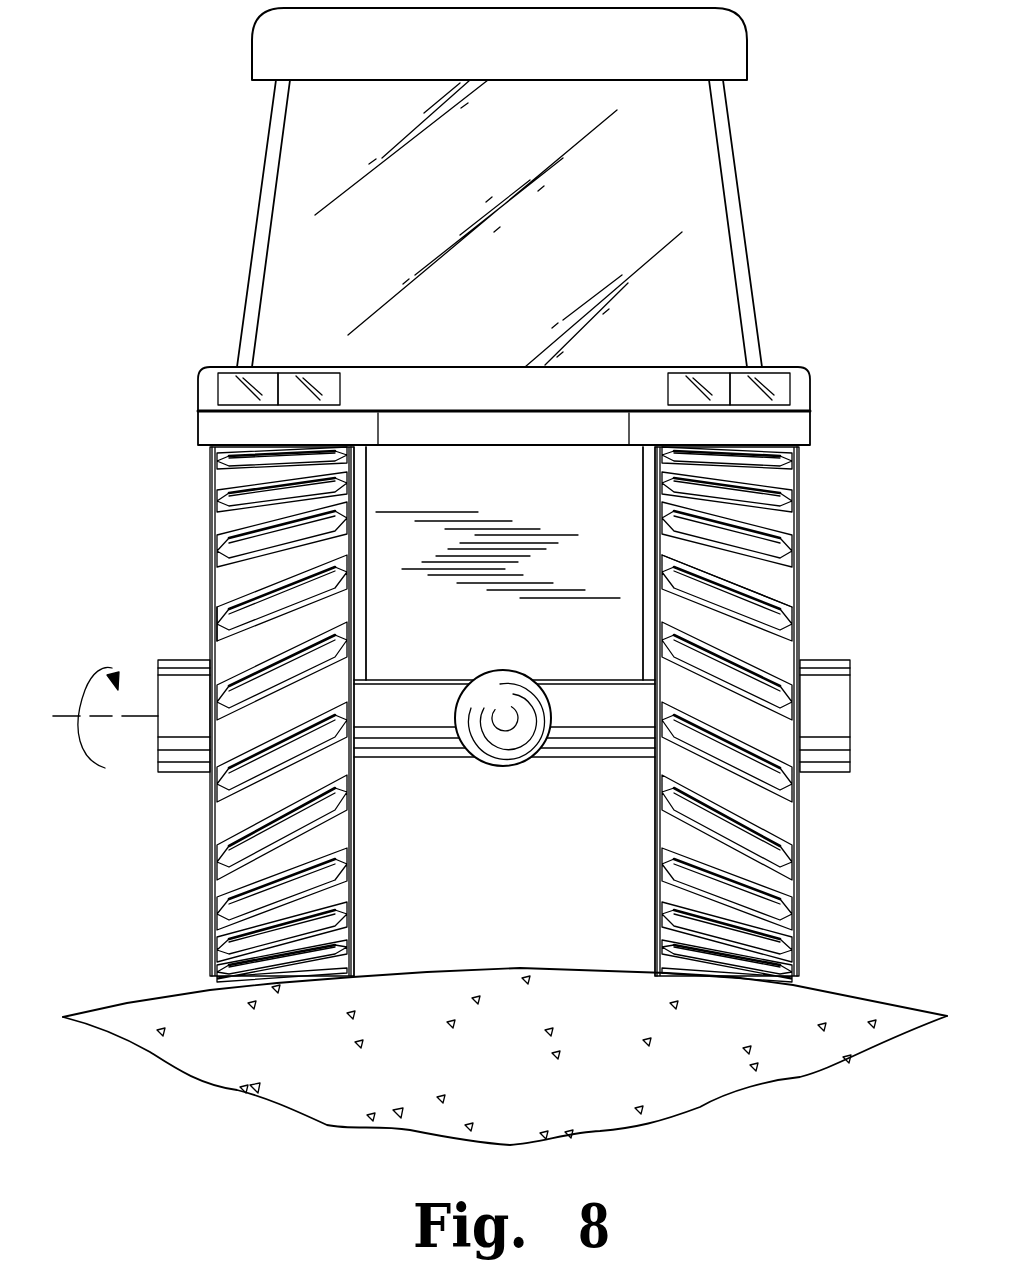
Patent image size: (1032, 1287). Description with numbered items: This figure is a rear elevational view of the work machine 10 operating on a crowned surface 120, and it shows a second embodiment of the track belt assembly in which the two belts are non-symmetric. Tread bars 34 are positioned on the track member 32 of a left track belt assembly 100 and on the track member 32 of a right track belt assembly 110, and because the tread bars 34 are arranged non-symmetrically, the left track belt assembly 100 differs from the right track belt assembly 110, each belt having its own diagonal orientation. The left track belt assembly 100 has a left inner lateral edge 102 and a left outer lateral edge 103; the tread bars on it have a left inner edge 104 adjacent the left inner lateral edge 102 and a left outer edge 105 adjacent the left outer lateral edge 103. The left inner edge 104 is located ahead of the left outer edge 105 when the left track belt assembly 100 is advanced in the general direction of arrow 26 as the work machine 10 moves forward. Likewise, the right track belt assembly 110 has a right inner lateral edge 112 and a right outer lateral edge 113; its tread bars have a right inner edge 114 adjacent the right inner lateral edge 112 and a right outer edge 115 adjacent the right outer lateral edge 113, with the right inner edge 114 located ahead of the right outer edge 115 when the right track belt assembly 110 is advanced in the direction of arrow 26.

The work machine 10 is at (195, 138).
The left track belt assembly 100 is at (174, 520).
The right track belt assembly 110 is at (828, 476).
The track member 32 is at (226, 822).
The tread bars 34 is at (232, 624).
The right outer edge 115 is at (798, 568).
The left outer edge 105 is at (216, 640).
The left outer lateral edge 103 is at (210, 789).
The right outer lateral edge 113 is at (800, 827).
The arrow 26 is at (76, 730).
The left inner edge 104 is at (350, 568).
The left inner lateral edge 102 is at (355, 606).
The right inner edge 114 is at (657, 570).
The right inner lateral edge 112 is at (655, 606).
The crowned surface 120 is at (492, 968).